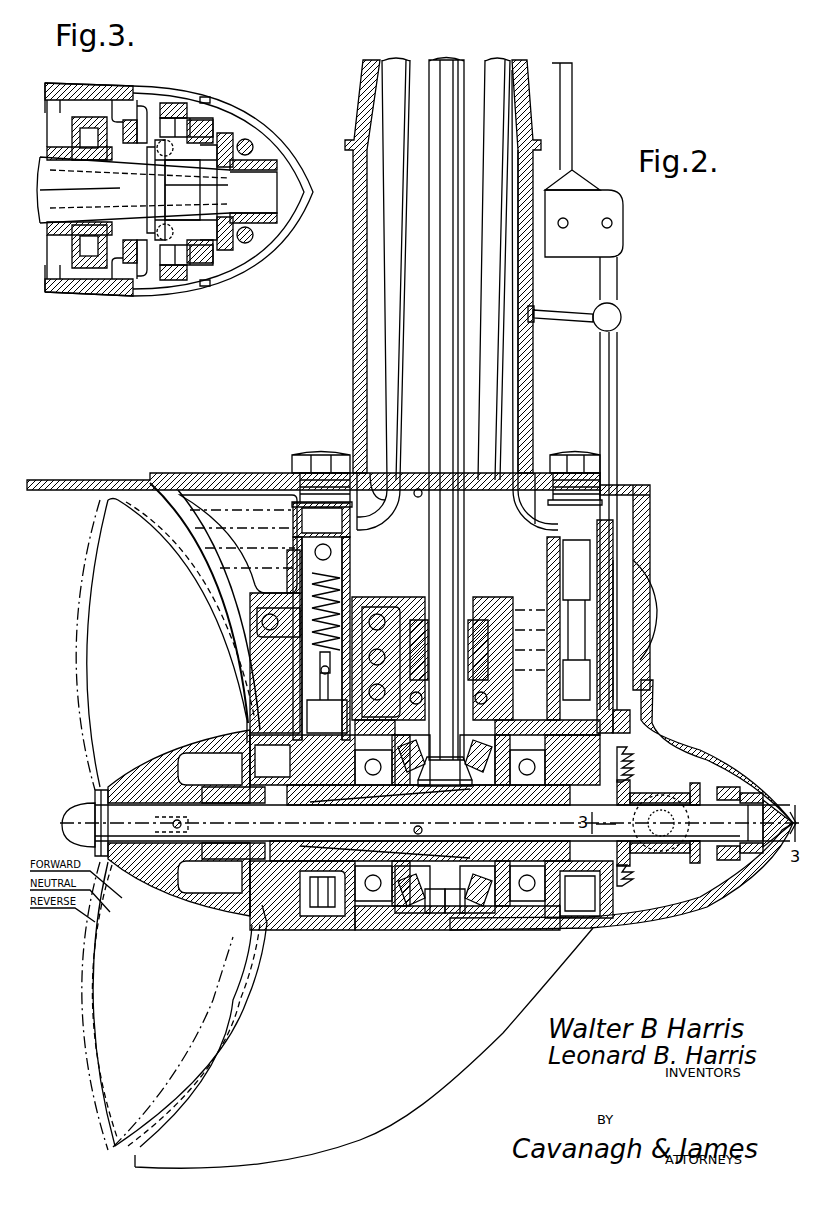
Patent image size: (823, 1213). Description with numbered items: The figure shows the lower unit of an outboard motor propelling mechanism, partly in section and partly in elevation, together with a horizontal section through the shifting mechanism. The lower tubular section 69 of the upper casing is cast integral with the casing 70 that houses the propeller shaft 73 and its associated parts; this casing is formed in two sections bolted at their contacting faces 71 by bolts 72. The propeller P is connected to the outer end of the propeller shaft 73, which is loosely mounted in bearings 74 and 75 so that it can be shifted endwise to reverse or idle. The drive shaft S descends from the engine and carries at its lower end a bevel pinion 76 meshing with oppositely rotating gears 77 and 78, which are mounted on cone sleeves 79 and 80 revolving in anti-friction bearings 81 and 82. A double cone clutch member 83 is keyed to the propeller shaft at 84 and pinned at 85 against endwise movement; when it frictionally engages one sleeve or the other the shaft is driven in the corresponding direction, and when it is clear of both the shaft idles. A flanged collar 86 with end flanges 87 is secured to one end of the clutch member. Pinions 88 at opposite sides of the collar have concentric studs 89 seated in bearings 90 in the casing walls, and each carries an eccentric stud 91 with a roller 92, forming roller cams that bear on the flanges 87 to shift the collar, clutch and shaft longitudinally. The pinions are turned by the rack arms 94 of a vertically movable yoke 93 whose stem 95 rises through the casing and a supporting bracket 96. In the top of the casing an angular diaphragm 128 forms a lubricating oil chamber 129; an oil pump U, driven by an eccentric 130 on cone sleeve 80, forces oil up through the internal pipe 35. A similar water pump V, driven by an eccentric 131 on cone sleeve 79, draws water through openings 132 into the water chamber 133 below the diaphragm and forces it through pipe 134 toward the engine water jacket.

In FIG. 2, the internal pipe 35 is at (497, 403).
In FIG. 2, the lower tubular section 69 is at (353, 318).
In FIG. 3, the casing 70 is at (262, 143).
In FIG. 2, the casing 70 is at (658, 675).
In FIG. 2, the contacting faces 71 is at (775, 805).
In FIG. 3, the bolts 72 is at (248, 140).
In FIG. 2, the propeller shaft 73 is at (430, 823).
In FIG. 3, the bearing 74 is at (270, 162).
In FIG. 2, the bearing 74 is at (757, 850).
In FIG. 2, the bearing 75 is at (330, 860).
In FIG. 2, the bevel pinion 76 is at (455, 760).
In FIG. 2, the gear 77 is at (410, 906).
In FIG. 2, the gear 78 is at (485, 906).
In FIG. 2, the cone sleeve 79 is at (432, 901).
In FIG. 3, the cone sleeve 80 is at (66, 230).
In FIG. 2, the cone sleeve 80 is at (463, 901).
In FIG. 2, the anti-friction bearing 81 is at (372, 893).
In FIG. 2, the anti-friction bearing 82 is at (527, 893).
In FIG. 3, the double cone clutch member 83 is at (62, 192).
In FIG. 2, the double cone clutch member 83 is at (466, 797).
In FIG. 2, the key 84 is at (505, 802).
In FIG. 2, the pin 85 is at (426, 820).
In FIG. 2, the flanged collar 86 is at (693, 863).
In FIG. 3, the end flanges 87 is at (152, 184).
In FIG. 2, the end flanges 87 is at (627, 866).
In FIG. 3, the pinions 88 is at (195, 118).
In FIG. 2, the pinions 88 is at (660, 855).
In FIG. 3, the concentric studs 89 is at (175, 110).
In FIG. 2, the concentric studs 89 is at (666, 796).
In FIG. 3, the bearings 90 is at (158, 100).
In FIG. 3, the eccentric stud 91 is at (178, 160).
In FIG. 3, the roller 92 is at (196, 145).
In FIG. 2, the yoke 93 is at (632, 714).
In FIG. 3, the rack arms 94 is at (128, 118).
In FIG. 2, the rack arms 94 is at (634, 760).
In FIG. 2, the stem 95 is at (575, 92).
In FIG. 2, the supporting bracket 96 is at (565, 320).
In FIG. 2, the diaphragm 128 is at (488, 600).
In FIG. 2, the lubricating oil chamber 129 is at (389, 512).
In FIG. 3, the eccentric 130 is at (90, 268).
In FIG. 2, the eccentric 130 is at (580, 893).
In FIG. 2, the eccentric 131 is at (320, 913).
In FIG. 2, the openings 132 is at (266, 612).
In FIG. 2, the water chamber 133 is at (285, 628).
In FIG. 2, the pipe 134 is at (368, 395).
In FIG. 2, the drive shaft S is at (446, 409).
In FIG. 2, the water pump V is at (295, 548).
In FIG. 2, the oil pump U is at (612, 592).
In FIG. 2, the propeller P is at (130, 702).